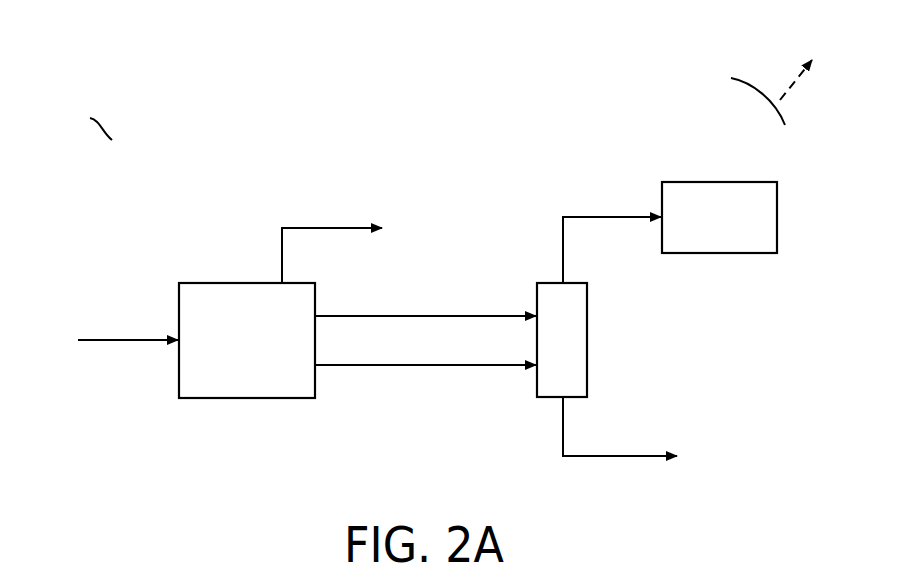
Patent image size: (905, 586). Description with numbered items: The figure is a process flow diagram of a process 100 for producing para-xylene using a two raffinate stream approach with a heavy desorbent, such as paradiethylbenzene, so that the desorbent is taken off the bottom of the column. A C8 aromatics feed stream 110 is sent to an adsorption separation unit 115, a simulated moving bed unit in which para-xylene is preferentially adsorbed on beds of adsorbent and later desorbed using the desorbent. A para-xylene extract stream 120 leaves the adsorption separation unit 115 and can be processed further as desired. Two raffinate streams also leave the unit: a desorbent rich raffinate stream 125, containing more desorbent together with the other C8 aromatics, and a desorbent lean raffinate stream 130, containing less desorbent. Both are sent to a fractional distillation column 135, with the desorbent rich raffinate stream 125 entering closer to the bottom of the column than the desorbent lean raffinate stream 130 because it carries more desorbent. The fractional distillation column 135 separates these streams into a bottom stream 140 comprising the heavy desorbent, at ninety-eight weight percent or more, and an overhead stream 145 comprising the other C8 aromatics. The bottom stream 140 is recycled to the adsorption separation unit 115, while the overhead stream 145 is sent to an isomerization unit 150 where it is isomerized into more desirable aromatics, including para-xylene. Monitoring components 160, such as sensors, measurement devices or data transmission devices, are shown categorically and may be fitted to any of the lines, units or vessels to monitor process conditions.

The process 100 is at (112, 140).
The C8 aromatics feed stream 110 is at (124, 339).
The adsorption separation unit 115 is at (210, 283).
The para-xylene extract stream 120 is at (321, 227).
The desorbent rich raffinate stream 125 is at (425, 366).
The desorbent lean raffinate stream 130 is at (411, 314).
The fractional distillation column 135 is at (588, 339).
The bottom stream 140 is at (608, 458).
The overhead stream 145 is at (601, 216).
The isomerization unit 150 is at (721, 181).
The monitoring components 160 is at (764, 83).